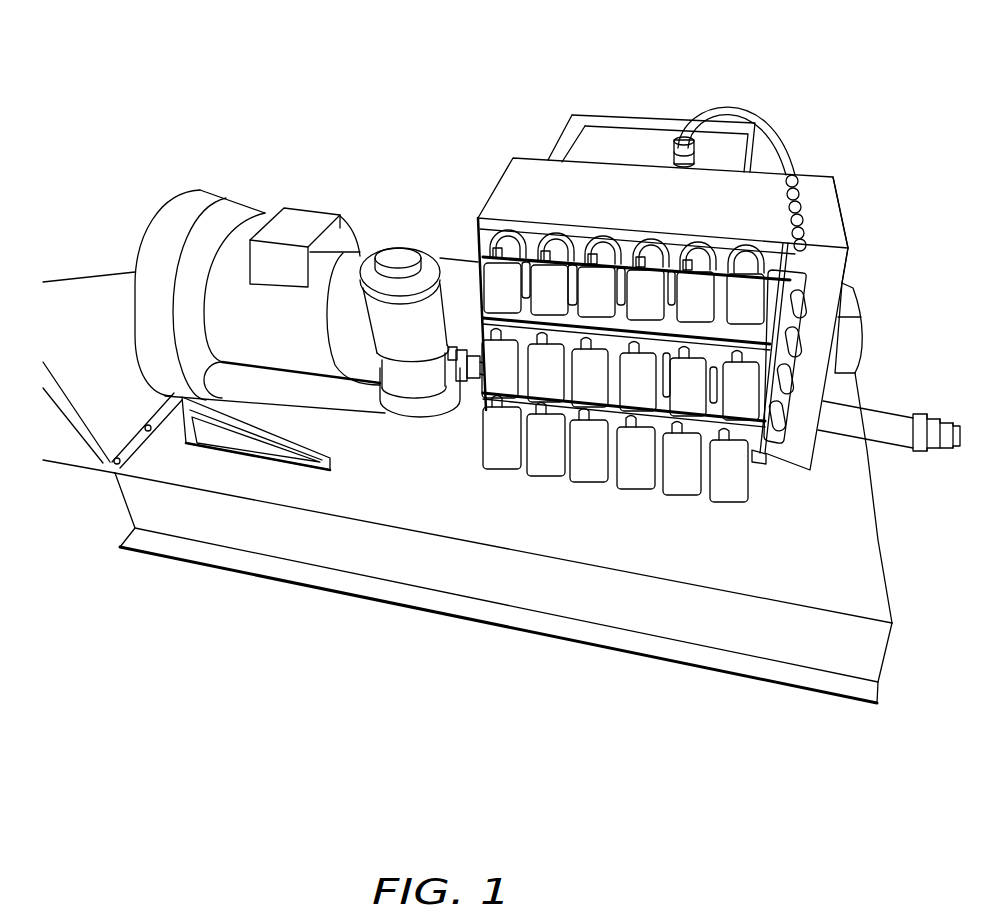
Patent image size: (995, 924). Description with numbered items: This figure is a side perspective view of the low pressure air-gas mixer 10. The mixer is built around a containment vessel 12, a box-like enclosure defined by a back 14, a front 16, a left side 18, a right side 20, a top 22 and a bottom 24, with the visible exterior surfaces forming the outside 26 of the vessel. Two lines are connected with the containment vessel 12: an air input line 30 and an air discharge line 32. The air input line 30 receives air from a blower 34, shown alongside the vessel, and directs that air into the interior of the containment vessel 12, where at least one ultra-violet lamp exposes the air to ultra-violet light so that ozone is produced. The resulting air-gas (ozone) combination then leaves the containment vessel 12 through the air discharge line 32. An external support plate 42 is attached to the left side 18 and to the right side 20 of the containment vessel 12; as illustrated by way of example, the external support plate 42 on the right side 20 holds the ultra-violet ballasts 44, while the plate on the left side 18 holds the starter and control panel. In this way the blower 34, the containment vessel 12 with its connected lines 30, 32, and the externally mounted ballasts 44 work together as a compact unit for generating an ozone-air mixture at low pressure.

The low pressure air-gas mixer 10 is at (884, 99).
The containment vessel 12 is at (770, 198).
The back 14 is at (482, 192).
The front 16 is at (858, 252).
The left side 18 is at (764, 165).
The right side 20 is at (793, 257).
The top 22 is at (731, 219).
The bottom 24 is at (790, 478).
The outside 26 is at (710, 46).
The air input line 30 is at (478, 392).
The air discharge line 32 is at (848, 452).
The blower 34 is at (267, 300).
The external support plate 42 is at (760, 457).
The ultra-violet ballasts 44 is at (597, 297).